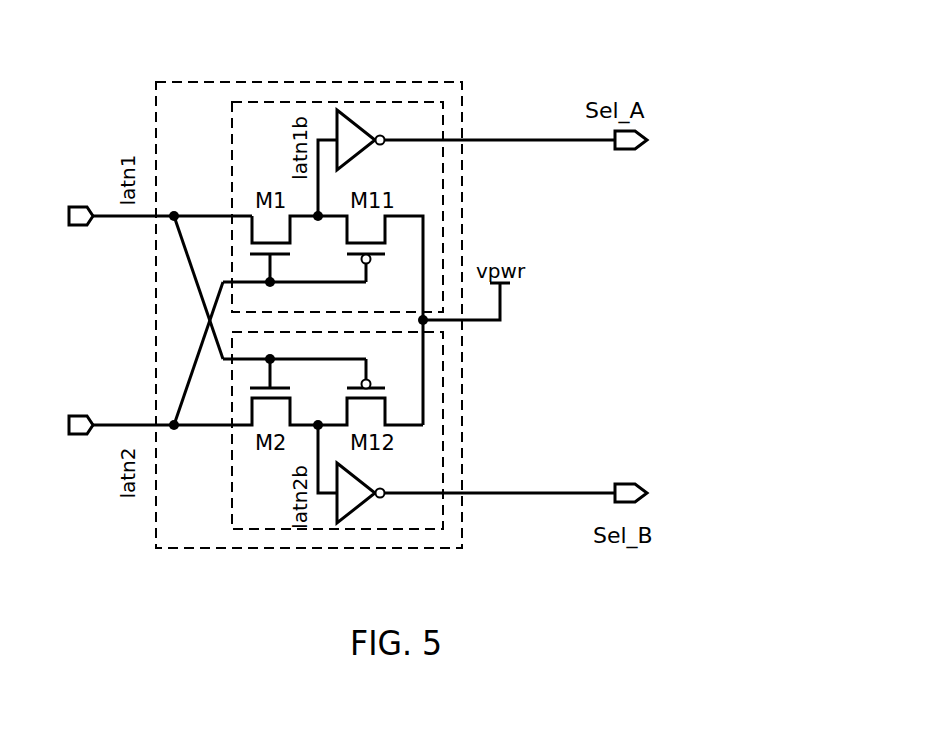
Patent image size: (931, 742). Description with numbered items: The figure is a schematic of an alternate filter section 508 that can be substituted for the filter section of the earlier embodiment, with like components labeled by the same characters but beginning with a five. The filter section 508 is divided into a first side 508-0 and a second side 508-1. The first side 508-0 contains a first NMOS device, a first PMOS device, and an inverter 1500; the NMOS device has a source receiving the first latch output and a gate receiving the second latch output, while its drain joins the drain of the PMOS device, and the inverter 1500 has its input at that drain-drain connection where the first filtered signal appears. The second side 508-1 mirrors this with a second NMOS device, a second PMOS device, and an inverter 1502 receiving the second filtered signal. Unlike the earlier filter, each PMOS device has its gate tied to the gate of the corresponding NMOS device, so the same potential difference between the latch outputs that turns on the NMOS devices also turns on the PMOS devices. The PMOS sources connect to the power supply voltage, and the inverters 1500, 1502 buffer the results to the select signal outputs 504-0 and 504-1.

The filter section 508 is at (462, 100).
The first side of filter section 508-0 is at (443, 207).
The second side of filter section 508-1 is at (443, 447).
The inverter 1500 is at (360, 130).
The inverter 1502 is at (352, 500).
The select signal output 504-0 is at (633, 150).
The select signal output 504-1 is at (634, 484).